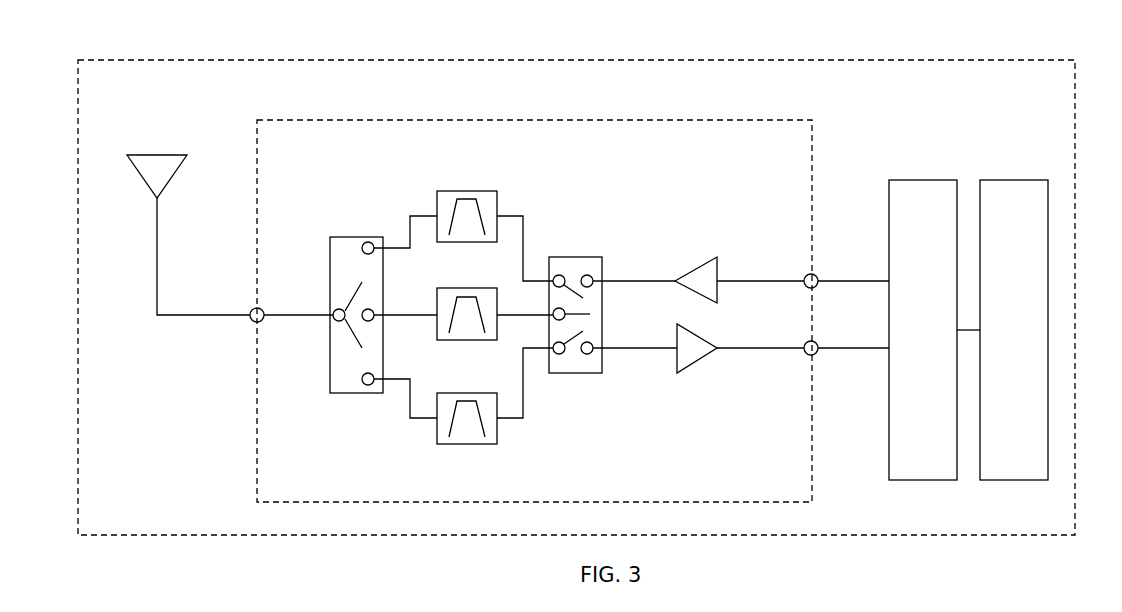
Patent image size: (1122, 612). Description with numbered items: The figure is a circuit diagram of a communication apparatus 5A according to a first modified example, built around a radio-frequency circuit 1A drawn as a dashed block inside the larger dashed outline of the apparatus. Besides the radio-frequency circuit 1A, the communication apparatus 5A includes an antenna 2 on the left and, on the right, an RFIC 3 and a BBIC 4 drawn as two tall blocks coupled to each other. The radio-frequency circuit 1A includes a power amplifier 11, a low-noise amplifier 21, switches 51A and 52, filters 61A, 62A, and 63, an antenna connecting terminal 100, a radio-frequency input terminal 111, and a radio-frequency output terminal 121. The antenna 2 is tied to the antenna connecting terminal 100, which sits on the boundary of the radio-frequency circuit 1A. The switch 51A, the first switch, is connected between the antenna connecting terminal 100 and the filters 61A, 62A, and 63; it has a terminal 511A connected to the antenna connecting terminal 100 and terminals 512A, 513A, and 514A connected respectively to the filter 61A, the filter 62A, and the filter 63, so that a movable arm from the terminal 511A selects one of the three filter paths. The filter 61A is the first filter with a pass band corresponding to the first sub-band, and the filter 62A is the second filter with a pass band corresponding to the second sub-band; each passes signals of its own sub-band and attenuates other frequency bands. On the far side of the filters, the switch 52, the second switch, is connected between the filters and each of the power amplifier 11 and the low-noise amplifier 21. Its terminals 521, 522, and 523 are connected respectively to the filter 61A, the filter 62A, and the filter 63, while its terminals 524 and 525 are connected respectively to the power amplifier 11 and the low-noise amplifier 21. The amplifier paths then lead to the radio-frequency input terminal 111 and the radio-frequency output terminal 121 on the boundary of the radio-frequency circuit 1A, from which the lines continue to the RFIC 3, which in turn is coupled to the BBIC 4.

The communication apparatus 5A is at (1036, 60).
The radio-frequency circuit 1A is at (775, 120).
The antenna 2 is at (155, 155).
The antenna connecting terminal 100 is at (263, 309).
The switch 51A is at (355, 237).
The terminal 511A is at (333, 320).
The terminal 512A is at (364, 385).
The terminal 513A is at (373, 320).
The terminal 514A is at (373, 253).
The filter 63 is at (457, 191).
The filter 62A is at (456, 288).
The filter 61A is at (456, 393).
The switch 52 is at (576, 257).
The terminal 521 is at (562, 354).
The terminal 522 is at (553, 311).
The terminal 523 is at (557, 275).
The terminal 524 is at (591, 276).
The terminal 525 is at (591, 353).
The power amplifier 11 is at (697, 268).
The low-noise amplifier 21 is at (700, 338).
The radio-frequency input terminal 111 is at (805, 276).
The radio-frequency output terminal 121 is at (805, 342).
The RFIC 3 is at (925, 180).
The BBIC 4 is at (1011, 180).